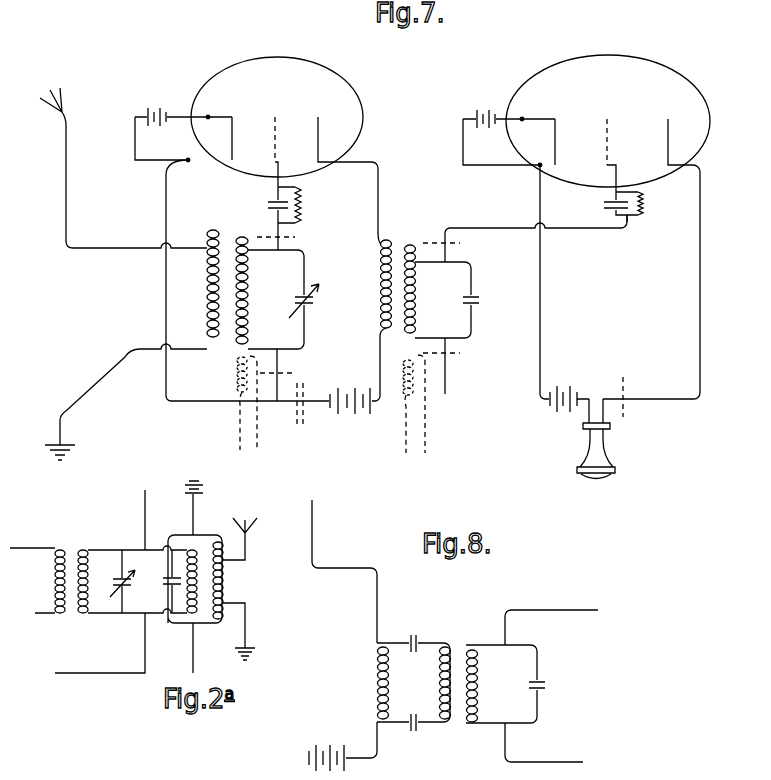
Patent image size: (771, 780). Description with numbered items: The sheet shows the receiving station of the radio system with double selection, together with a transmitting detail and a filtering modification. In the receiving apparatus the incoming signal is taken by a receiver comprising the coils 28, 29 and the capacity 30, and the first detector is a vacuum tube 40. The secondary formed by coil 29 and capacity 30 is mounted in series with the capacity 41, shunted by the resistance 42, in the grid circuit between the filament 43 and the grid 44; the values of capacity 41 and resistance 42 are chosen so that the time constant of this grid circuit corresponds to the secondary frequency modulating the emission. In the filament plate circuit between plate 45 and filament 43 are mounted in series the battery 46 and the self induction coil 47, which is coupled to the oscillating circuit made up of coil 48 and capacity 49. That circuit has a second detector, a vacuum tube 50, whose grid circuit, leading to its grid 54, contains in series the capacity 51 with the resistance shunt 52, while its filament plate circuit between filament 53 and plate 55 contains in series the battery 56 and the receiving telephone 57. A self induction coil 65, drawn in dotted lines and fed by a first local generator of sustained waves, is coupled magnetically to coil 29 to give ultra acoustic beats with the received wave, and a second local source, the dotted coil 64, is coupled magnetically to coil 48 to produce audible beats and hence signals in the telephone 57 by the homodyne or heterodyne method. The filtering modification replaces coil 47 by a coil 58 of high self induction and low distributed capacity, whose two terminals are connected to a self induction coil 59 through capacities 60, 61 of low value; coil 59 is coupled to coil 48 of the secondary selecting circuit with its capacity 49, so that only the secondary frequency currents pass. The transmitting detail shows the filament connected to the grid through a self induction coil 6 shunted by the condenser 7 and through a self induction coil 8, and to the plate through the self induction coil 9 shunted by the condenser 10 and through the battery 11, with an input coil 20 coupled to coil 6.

In FIG. 2A, the self induction coil 6 is at (132, 579).
In FIG. 2A, the condenser 7 is at (128, 581).
In FIG. 2A, the self induction coil 8 is at (198, 581).
In FIG. 2A, the self induction coil 9 is at (225, 580).
In FIG. 2A, the condenser 10 is at (165, 581).
In FIG. 2A, the battery 11 is at (184, 490).
In FIG. 2A, the coil 20 is at (50, 581).
In FIG. 7, the coil 28 is at (203, 283).
In FIG. 7, the secondary coil 29 is at (270, 293).
In FIG. 7, the capacity 30 is at (315, 301).
In FIG. 7, the vacuum tube 40 is at (360, 92).
In FIG. 7, the capacity 41 is at (269, 223).
In FIG. 7, the resistance 42 is at (300, 205).
In FIG. 7, the filament 43 is at (226, 126).
In FIG. 7, the grid 44 is at (274, 149).
In FIG. 7, the plate 45 is at (344, 171).
In FIG. 7, the battery 46 is at (350, 415).
In FIG. 7, the self induction coil 47 is at (371, 320).
In FIG. 7, the coil 48 is at (438, 291).
In FIG. 8, the coil 48 is at (501, 684).
In FIG. 7, the capacity 49 is at (485, 301).
In FIG. 8, the capacity 49 is at (549, 684).
In FIG. 7, the vacuum tube 50 is at (510, 98).
In FIG. 7, the capacity 51 is at (608, 207).
In FIG. 7, the resistance shunt 52 is at (642, 203).
In FIG. 7, the filament 53 is at (551, 131).
In FIG. 7, the grid 54 is at (605, 145).
In FIG. 7, the plate 55 is at (651, 250).
In FIG. 7, the battery 56 is at (569, 410).
In FIG. 7, the receiving telephone 57 is at (613, 453).
In FIG. 8, the coil 58 is at (380, 682).
In FIG. 8, the self induction coil 59 is at (434, 682).
In FIG. 8, the capacity 60 is at (413, 633).
In FIG. 8, the capacity 61 is at (411, 733).
In FIG. 7, the coil 64 is at (405, 404).
In FIG. 7, the self induction coil 65 is at (234, 403).